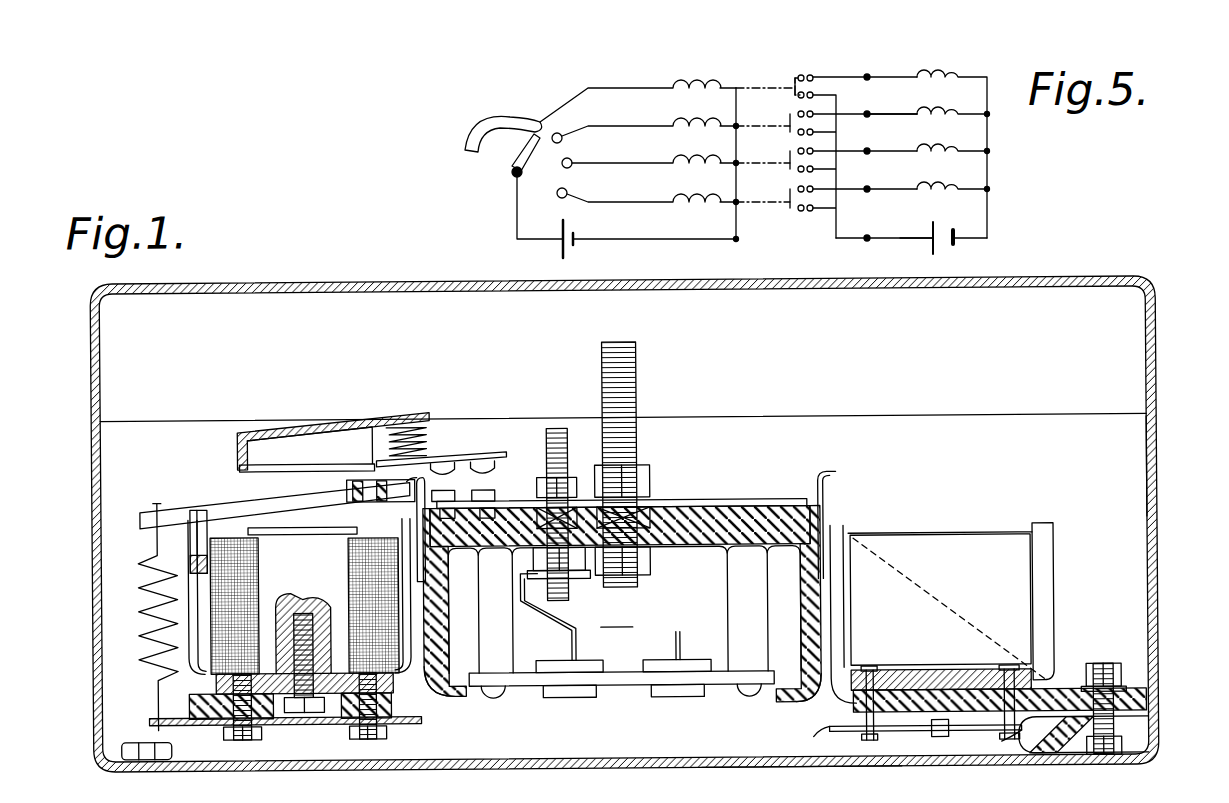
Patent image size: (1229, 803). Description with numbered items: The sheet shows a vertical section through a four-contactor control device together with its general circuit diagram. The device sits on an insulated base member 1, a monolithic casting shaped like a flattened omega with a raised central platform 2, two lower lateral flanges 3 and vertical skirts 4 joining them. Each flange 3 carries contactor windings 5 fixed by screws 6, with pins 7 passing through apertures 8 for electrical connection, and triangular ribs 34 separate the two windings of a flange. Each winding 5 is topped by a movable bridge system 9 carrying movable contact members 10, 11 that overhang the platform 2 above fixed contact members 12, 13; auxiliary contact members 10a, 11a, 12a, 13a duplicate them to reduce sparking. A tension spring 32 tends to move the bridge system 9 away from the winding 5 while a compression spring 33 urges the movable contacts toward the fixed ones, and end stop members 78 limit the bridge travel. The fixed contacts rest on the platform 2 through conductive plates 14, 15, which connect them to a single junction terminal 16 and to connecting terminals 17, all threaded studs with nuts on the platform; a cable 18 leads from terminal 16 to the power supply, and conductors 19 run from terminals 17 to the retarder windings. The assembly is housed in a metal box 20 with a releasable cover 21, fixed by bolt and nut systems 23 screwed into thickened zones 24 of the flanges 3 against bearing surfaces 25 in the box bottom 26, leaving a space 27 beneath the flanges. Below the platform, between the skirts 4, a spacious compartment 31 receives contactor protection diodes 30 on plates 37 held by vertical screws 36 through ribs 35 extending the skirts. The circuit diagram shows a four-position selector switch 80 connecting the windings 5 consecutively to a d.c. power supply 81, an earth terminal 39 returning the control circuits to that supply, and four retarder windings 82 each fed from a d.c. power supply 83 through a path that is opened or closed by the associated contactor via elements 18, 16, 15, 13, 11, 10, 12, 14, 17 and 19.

In FIG. 1, the base member 1 is at (704, 557).
In FIG. 1, the central platform 2 is at (750, 525).
In FIG. 1, the flanges 3 is at (395, 714).
In FIG. 1, the skirts 4 is at (622, 684).
In FIG. 1, the contactor windings 5 is at (237, 535).
In FIG. 5, the contactor windings 5 is at (705, 82).
In FIG. 1, the screws 6 is at (252, 730).
In FIG. 1, the pins 7 is at (868, 680).
In FIG. 1, the apertures 8 is at (885, 690).
In FIG. 1, the movable bridge system 9 is at (333, 424).
In FIG. 1, the movable contact member 10 is at (505, 442).
In FIG. 5, the movable contact member 10 is at (774, 77).
In FIG. 1, the movable contact member 11 is at (490, 456).
In FIG. 5, the movable contact member 11 is at (803, 74).
In FIG. 1, the fixed contact member 12 is at (538, 455).
In FIG. 5, the fixed contact member 12 is at (818, 76).
In FIG. 1, the fixed contact member 13 is at (497, 490).
In FIG. 5, the fixed contact member 13 is at (813, 96).
In FIG. 1, the auxiliary contact member 10a is at (447, 430).
In FIG. 1, the auxiliary contact member 11a is at (443, 465).
In FIG. 1, the auxiliary contact member 12a is at (306, 449).
In FIG. 1, the auxiliary contact member 13a is at (306, 449).
In FIG. 1, the conductive plate 14 is at (621, 482).
In FIG. 5, the conductive plate 14 is at (855, 76).
In FIG. 1, the conductive plate 15 is at (690, 500).
In FIG. 5, the conductive plate 15 is at (840, 100).
In FIG. 1, the junction terminal 16 is at (637, 365).
In FIG. 5, the junction terminal 16 is at (866, 237).
In FIG. 1, the connecting terminals 17 is at (568, 437).
In FIG. 5, the connecting terminals 17 is at (888, 77).
In FIG. 5, the cable 18 is at (912, 238).
In FIG. 5, the conductors 19 is at (882, 80).
In FIG. 1, the box 20 is at (1157, 540).
In FIG. 1, the cover 21 is at (243, 282).
In FIG. 1, the bolt and nut systems 23 is at (1112, 677).
In FIG. 1, the thickened zones 24 is at (1098, 722).
In FIG. 1, the bearing surfaces 25 is at (1110, 745).
In FIG. 1, the box bottom 26 is at (813, 768).
In FIG. 1, the space 27 is at (1033, 738).
In FIG. 1, the contactor protection diodes 30 is at (600, 668).
In FIG. 1, the compartment 31 is at (617, 618).
In FIG. 1, the tension spring 32 is at (143, 568).
In FIG. 1, the compression spring 33 is at (408, 430).
In FIG. 1, the strengthening and separating ribs 34 is at (893, 565).
In FIG. 1, the ribs 35 is at (493, 640).
In FIG. 1, the vertical screws 36 is at (497, 690).
In FIG. 1, the plates 37 is at (721, 686).
In FIG. 5, the earth terminal 39 is at (738, 239).
In FIG. 1, the end stop members 78 is at (417, 502).
In FIG. 5, the control selector switch 80 is at (500, 125).
In FIG. 5, the d.c. power supply 81 is at (560, 236).
In FIG. 5, the retarder windings 82 is at (940, 78).
In FIG. 5, the d.c. power supply 83 is at (960, 236).